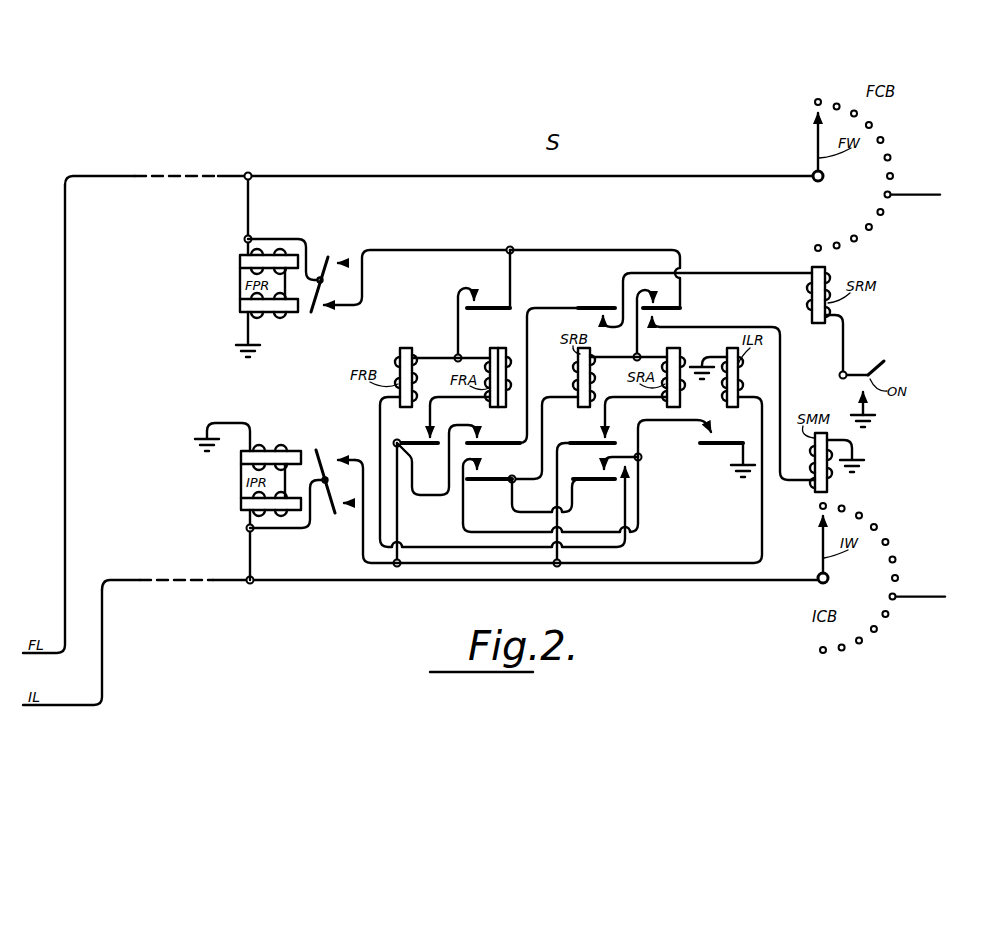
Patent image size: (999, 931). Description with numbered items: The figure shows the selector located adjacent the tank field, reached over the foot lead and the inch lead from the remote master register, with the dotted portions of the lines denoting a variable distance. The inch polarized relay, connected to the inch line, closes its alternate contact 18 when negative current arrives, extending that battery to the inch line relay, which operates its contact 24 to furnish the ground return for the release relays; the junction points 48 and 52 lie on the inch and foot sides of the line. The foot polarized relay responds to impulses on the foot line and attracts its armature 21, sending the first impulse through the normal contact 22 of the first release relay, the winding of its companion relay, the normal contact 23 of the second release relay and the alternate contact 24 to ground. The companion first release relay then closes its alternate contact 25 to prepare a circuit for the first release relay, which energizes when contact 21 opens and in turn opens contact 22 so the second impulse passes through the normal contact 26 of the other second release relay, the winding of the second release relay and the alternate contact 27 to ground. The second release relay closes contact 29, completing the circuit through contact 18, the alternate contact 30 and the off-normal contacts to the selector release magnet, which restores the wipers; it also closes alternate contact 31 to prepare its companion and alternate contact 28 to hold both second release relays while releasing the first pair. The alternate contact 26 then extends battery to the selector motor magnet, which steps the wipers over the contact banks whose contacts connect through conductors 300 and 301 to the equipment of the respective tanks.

The junction of forward line 52 is at (252, 173).
The junction of inverse line 48 is at (252, 585).
The armature of foot polarized relay FPR 21 is at (315, 301).
The alternate contact of inch polarized relay IPR 18 is at (321, 455).
The normal contact of relay FRA 22 is at (483, 303).
The alternate contact of relay SRB 29 is at (587, 306).
The contact of relay SRA 26 is at (675, 304).
The alternate contact of relay FRA 30 is at (492, 441).
The alternate contact of relay SRB 31 is at (588, 438).
The normal contact of relay SRB 23 is at (620, 456).
The alternate contact of relay FRB 25 is at (433, 446).
The alternate contact of relay FRA 27 is at (492, 482).
The alternate contact of relay SRB 28 is at (602, 482).
The alternate contact of inch line relay ILR 24 is at (718, 447).
The conductor to tank equipment 300 is at (926, 189).
The conductor to tank equipment 301 is at (930, 592).